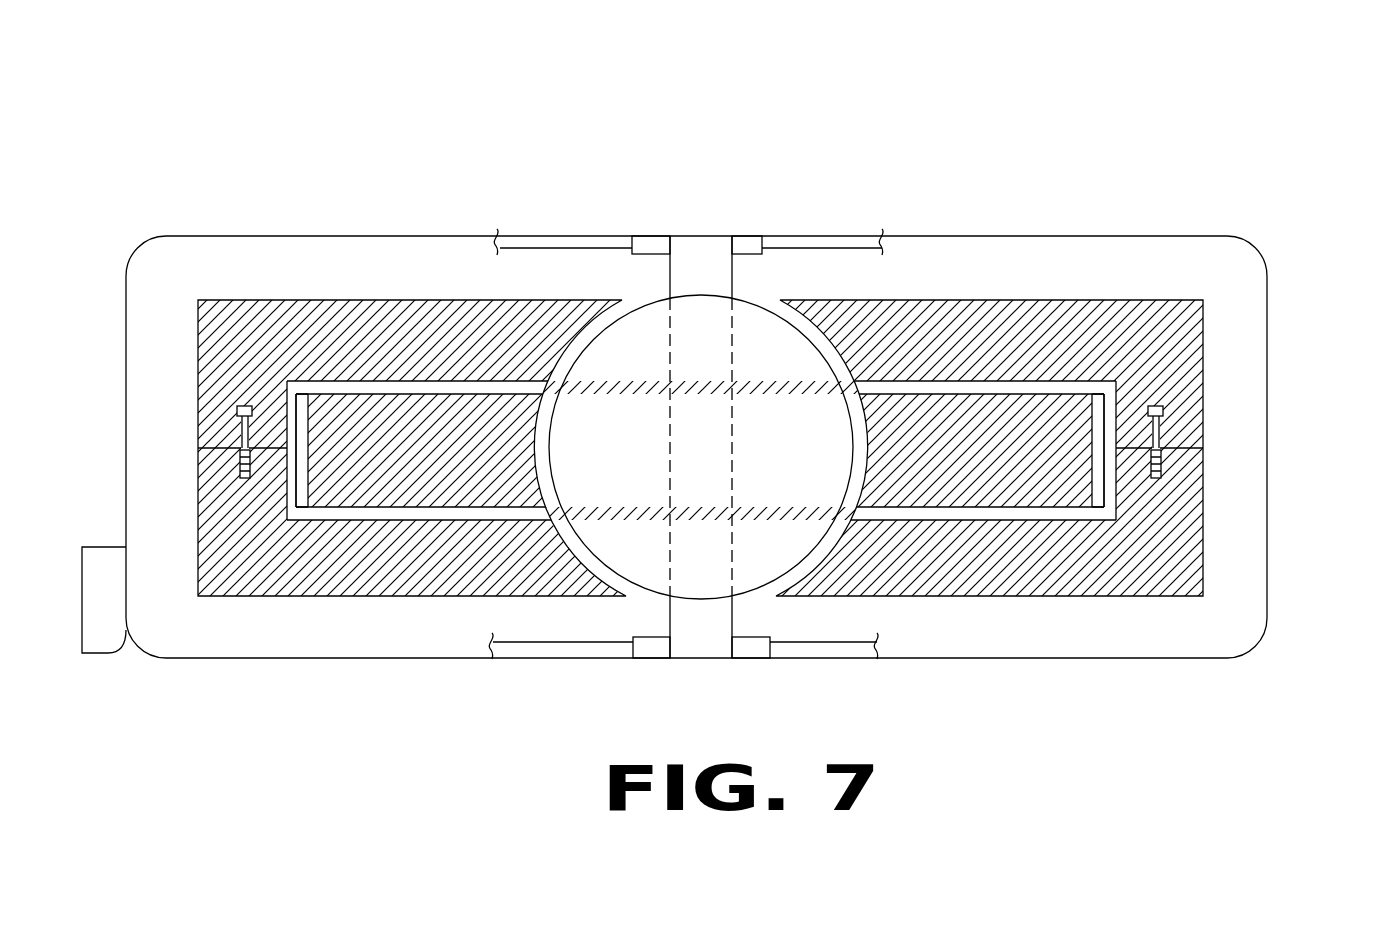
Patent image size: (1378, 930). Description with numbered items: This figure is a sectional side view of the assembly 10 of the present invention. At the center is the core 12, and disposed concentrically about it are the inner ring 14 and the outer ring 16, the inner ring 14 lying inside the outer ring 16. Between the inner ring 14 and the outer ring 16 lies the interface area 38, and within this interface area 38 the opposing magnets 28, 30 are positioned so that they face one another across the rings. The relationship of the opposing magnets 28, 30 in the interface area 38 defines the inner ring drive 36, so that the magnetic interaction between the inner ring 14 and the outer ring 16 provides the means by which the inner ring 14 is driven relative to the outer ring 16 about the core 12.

The assembly 10 is at (893, 172).
The core 12 is at (755, 317).
The inner ring 14 is at (908, 407).
The outer ring 16 is at (978, 325).
The opposing magnet 28 is at (1092, 497).
The opposing magnet 30 is at (1112, 401).
The inner ring drive 36 is at (1113, 383).
The interface area 38 is at (1100, 478).